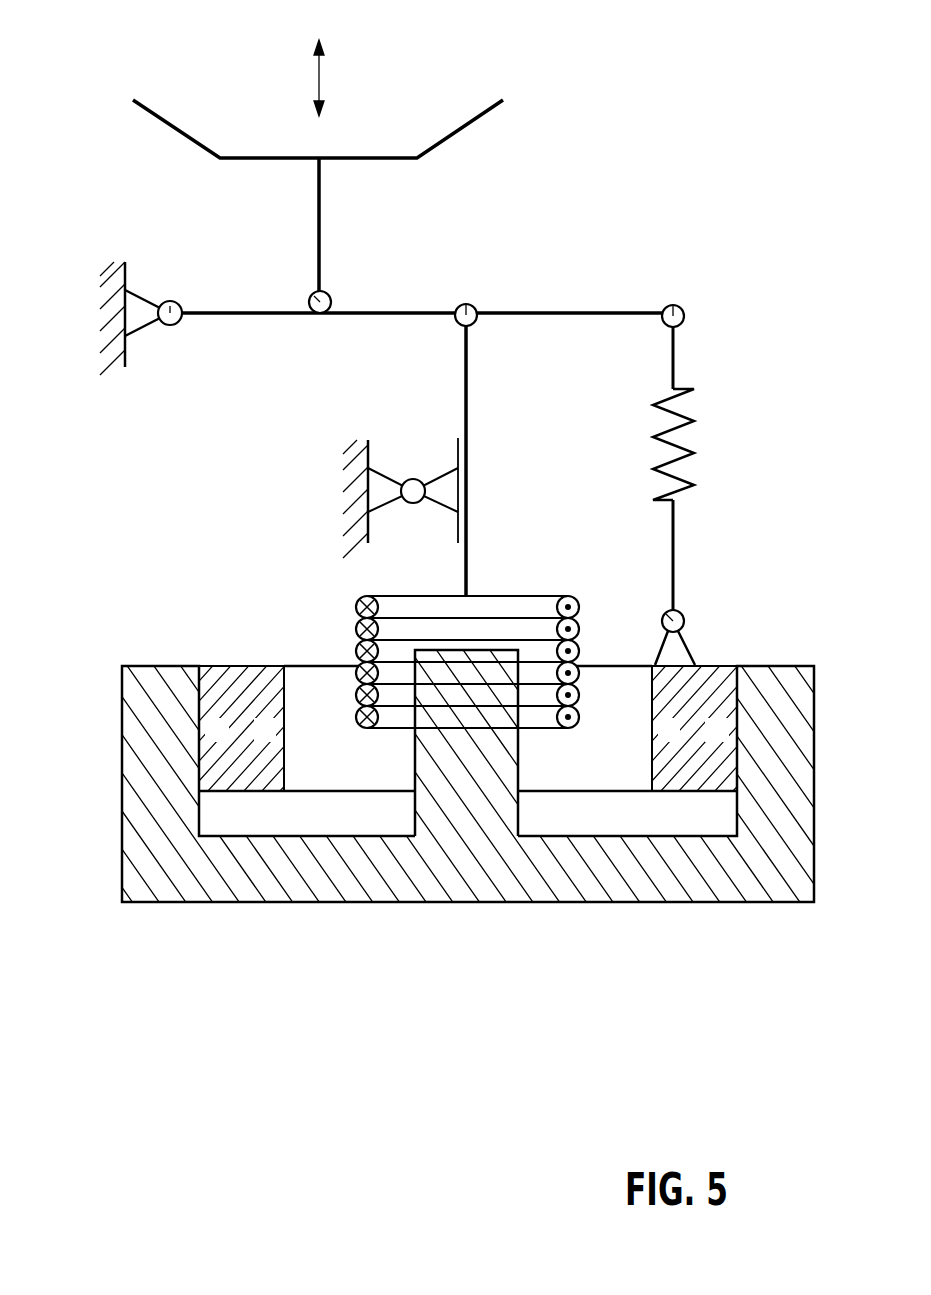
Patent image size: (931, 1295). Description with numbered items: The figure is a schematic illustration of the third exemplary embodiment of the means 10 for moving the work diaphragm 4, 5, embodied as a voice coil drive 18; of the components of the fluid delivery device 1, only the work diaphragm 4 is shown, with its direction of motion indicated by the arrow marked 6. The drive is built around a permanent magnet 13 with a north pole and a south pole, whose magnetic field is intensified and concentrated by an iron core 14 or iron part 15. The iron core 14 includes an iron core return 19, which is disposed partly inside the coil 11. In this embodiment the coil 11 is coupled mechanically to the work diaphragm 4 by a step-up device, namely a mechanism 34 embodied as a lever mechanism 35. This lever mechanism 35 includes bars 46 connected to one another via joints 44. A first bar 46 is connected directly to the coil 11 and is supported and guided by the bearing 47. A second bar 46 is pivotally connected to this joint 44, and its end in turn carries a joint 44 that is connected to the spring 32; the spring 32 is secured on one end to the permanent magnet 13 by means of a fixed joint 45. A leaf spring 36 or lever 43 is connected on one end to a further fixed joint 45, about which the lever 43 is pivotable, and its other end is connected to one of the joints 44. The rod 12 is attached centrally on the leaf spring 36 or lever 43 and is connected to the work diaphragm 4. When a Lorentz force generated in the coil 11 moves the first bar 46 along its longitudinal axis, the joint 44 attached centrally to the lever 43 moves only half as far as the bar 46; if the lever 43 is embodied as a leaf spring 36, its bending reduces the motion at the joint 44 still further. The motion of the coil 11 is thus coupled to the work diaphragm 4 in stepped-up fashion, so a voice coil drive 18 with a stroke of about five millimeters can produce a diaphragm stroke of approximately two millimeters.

The fluid delivery device 1 is at (248, 1103).
The means for moving the work diaphragm 10 is at (248, 1103).
The voice coil drive 18 is at (245, 1022).
The work diaphragm 4 is at (318, 81).
The pressure plate 5 is at (458, 128).
The stroke direction 6 is at (268, 130).
The coil 11 is at (526, 565).
The rod 12 is at (323, 205).
The permanent magnet 13 is at (240, 695).
The iron core 14 is at (465, 822).
The iron part 15 is at (178, 865).
The iron core return 19 is at (467, 678).
The spring 32 is at (712, 430).
The mechanism 34 is at (123, 510).
The lever mechanism 35 is at (183, 465).
The leaf spring 36 is at (421, 359).
The lever 43 is at (368, 317).
The joint 44 is at (312, 294).
The fixed joint 45 is at (170, 300).
The bar 46 is at (567, 311).
The bearing 47 is at (414, 452).